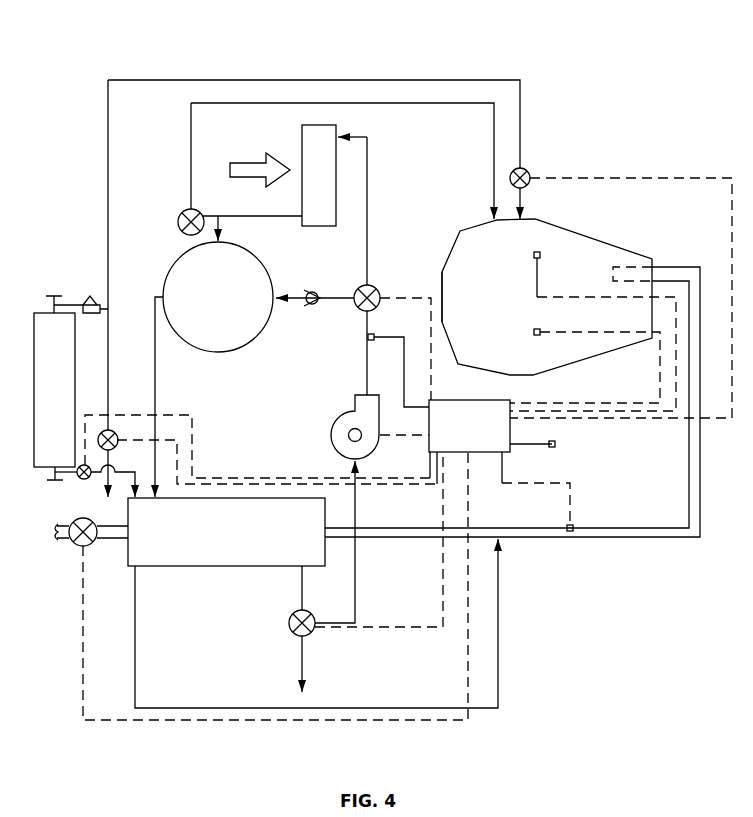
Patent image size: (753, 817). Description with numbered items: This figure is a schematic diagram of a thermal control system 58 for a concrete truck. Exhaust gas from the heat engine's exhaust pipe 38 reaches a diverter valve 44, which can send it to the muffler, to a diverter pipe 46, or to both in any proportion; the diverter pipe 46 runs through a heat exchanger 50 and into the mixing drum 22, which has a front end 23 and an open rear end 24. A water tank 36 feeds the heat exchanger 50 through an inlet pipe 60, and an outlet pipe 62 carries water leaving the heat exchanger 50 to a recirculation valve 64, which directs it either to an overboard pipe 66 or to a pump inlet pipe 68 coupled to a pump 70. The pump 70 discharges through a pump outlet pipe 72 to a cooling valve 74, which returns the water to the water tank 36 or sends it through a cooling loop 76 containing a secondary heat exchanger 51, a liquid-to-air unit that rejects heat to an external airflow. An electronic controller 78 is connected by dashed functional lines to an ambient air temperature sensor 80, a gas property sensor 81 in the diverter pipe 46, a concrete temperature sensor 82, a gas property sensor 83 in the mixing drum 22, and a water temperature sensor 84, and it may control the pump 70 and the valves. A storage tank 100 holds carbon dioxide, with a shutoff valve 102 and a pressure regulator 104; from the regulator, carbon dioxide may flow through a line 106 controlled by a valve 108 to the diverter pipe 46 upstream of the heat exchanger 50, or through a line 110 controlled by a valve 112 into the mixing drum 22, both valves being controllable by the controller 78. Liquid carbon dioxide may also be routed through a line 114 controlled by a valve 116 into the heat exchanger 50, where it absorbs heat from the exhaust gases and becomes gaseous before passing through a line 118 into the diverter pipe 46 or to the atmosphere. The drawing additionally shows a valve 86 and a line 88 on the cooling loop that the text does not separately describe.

The mixing drum 22 is at (576, 234).
The front end 23 is at (445, 260).
The rear end 24 is at (656, 262).
The water tank 36 is at (258, 297).
The exhaust pipe 38 is at (57, 527).
The diverter valve 44 is at (84, 518).
The diverter pipe 46 is at (595, 538).
The heat exchanger 50 is at (226, 532).
The secondary heat exchanger 51 is at (273, 175).
The thermal control system 58 is at (403, 53).
The inlet pipe 60 is at (155, 365).
The outlet pipe 62 is at (300, 583).
The recirculation valve 64 is at (288, 625).
The overboard pipe 66 is at (301, 663).
The pump inlet pipe 68 is at (356, 585).
The pump 70 is at (334, 441).
The pump outlet pipe 72 is at (366, 363).
The cooling valve 74 is at (377, 290).
The cooling loop 76 is at (347, 126).
The electronic controller 78 is at (469, 442).
The ambient air temperature sensor 80 is at (553, 448).
The gas property sensor 81 is at (566, 528).
The concrete temperature sensor 82 is at (540, 329).
The gas property sensor 83 is at (534, 255).
The water temperature sensor 84 is at (374, 334).
The fill valve 86 is at (182, 217).
The bypass line 88 is at (493, 128).
The storage tank 100 is at (41, 448).
The shutoff valve 102 is at (52, 296).
The pressure regulator 104 is at (88, 295).
The line 106 is at (108, 337).
The valve 108 is at (113, 432).
The line 110 is at (520, 116).
The valve 112 is at (528, 171).
The line 114 is at (127, 476).
The valve 116 is at (78, 476).
The line 118 is at (499, 631).